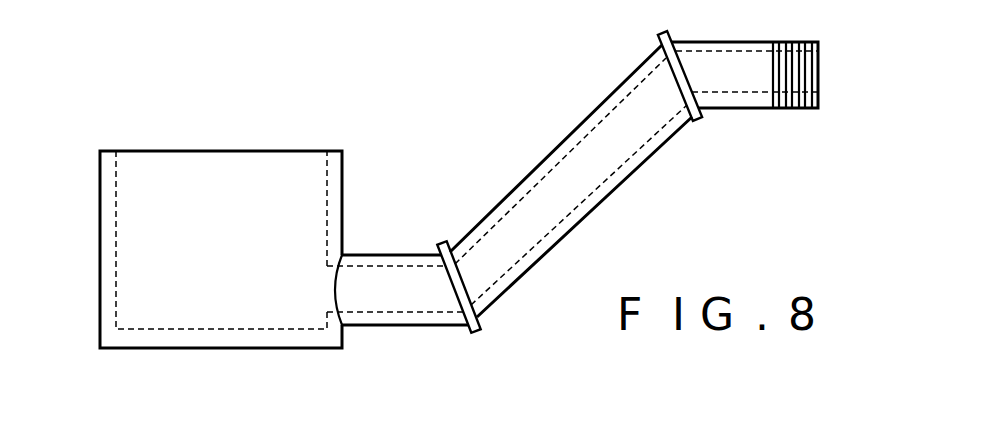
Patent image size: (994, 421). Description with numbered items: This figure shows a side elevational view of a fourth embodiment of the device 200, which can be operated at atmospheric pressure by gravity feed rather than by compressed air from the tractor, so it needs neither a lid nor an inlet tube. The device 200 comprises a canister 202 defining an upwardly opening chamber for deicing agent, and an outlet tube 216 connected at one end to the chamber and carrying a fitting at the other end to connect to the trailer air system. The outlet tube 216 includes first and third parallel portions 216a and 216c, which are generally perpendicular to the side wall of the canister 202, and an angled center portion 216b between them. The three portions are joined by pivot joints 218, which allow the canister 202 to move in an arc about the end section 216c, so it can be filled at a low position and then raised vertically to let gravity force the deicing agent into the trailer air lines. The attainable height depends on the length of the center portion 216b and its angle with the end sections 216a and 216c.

The device 200 is at (225, 122).
The canister 202 is at (78, 193).
The outlet tube 216 is at (492, 160).
The first parallel portion 216a is at (388, 255).
The angled center portion 216b is at (553, 246).
The third parallel portion 216c is at (740, 110).
The pivot joints 218 is at (472, 334).